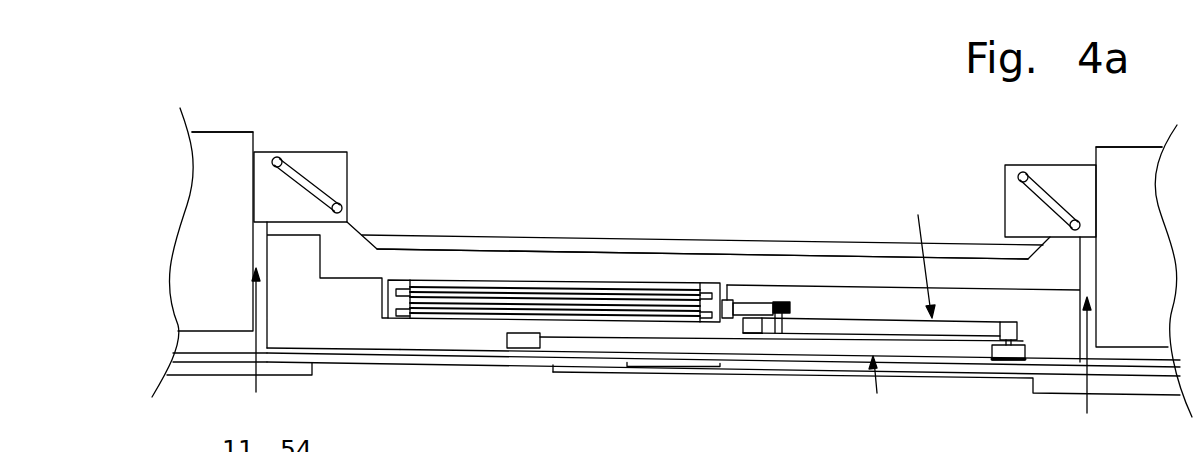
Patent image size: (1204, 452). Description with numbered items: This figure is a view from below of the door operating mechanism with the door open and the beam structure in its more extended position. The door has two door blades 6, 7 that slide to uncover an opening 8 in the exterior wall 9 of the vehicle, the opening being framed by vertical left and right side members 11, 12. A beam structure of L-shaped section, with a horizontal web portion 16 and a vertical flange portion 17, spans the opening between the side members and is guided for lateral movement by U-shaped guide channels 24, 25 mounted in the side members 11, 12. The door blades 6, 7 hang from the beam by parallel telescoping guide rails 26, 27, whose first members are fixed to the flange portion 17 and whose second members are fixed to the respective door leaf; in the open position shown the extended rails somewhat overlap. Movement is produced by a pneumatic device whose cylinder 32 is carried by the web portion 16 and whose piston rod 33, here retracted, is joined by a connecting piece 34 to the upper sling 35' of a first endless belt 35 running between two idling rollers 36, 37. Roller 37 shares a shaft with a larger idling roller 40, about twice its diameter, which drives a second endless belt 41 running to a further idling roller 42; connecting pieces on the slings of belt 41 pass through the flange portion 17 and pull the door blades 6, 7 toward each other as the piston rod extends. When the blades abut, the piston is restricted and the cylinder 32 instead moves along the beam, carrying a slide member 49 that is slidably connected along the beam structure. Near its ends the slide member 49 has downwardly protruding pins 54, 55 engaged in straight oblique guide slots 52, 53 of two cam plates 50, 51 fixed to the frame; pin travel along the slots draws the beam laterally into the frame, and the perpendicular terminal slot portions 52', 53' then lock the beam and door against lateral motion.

The door blade 6 is at (1067, 387).
The door blade 7 is at (277, 373).
The opening 8 is at (568, 202).
The exterior wall 9 is at (200, 332).
The left side member 11 is at (240, 132).
The right side member 12 is at (1096, 147).
The web portion 16 is at (365, 337).
The flange portion 17 is at (312, 350).
The guide channel 24 is at (253, 342).
The guide channel 25 is at (1096, 371).
The guide rail 26 is at (817, 368).
The guide rail 27 is at (485, 363).
The cylinder 32 is at (455, 310).
The piston rod 33 is at (745, 303).
The connecting piece 34 is at (790, 317).
The first endless belt 35 is at (917, 253).
The upper sling 35' is at (871, 276).
The idling roller 36 is at (752, 333).
The idling roller 37 is at (1013, 322).
The idling roller 40 is at (1002, 360).
The second endless belt 41 is at (884, 390).
The idling roller 42 is at (515, 348).
The slide member 49 is at (797, 268).
The guide plate 50 is at (322, 162).
The guide plate 51 is at (1083, 185).
The guide slot 52 is at (340, 174).
The slot portion 52' is at (294, 133).
The guide slot 53 is at (1023, 201).
The slot portion 53' is at (1005, 152).
The pin 54 is at (342, 208).
The pin 55 is at (1080, 223).